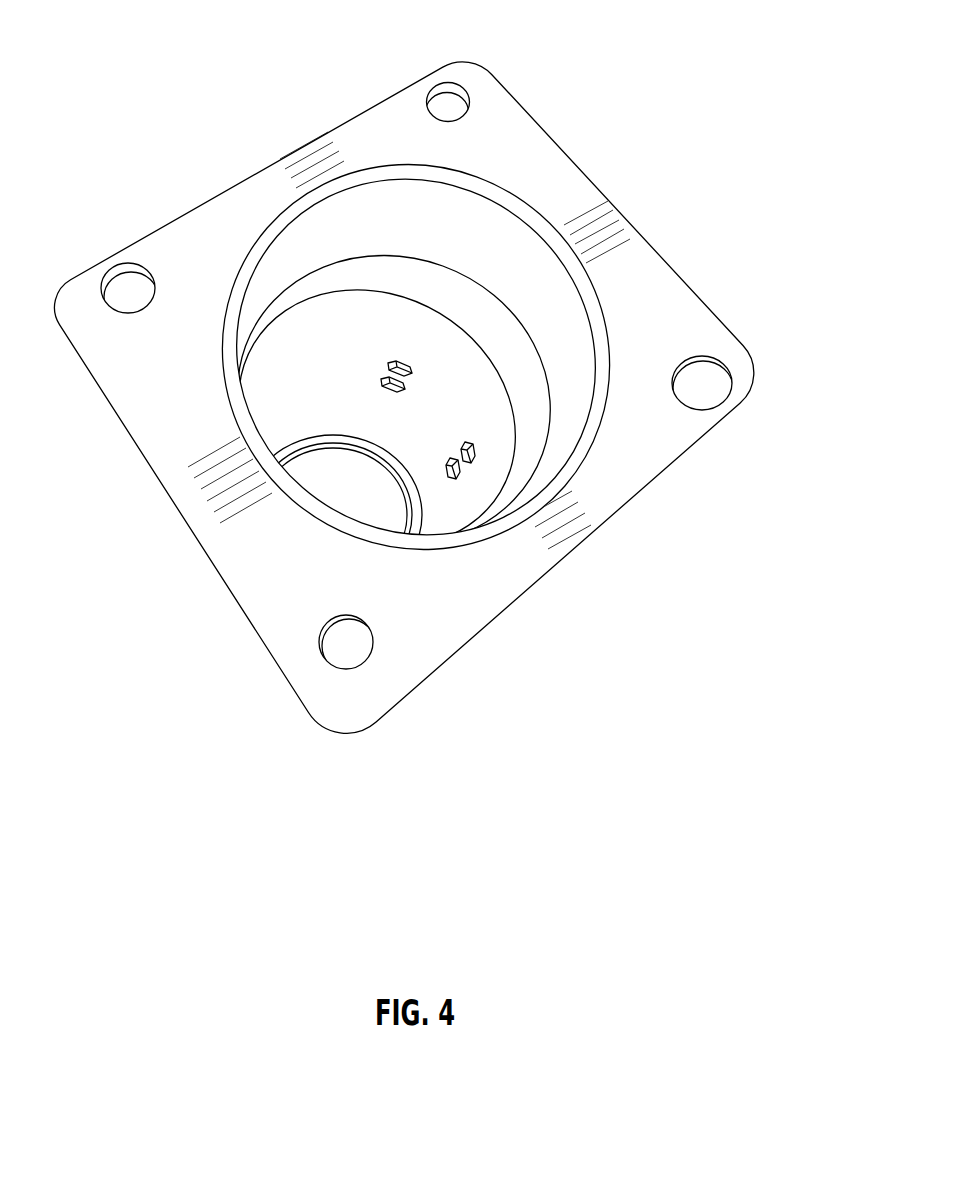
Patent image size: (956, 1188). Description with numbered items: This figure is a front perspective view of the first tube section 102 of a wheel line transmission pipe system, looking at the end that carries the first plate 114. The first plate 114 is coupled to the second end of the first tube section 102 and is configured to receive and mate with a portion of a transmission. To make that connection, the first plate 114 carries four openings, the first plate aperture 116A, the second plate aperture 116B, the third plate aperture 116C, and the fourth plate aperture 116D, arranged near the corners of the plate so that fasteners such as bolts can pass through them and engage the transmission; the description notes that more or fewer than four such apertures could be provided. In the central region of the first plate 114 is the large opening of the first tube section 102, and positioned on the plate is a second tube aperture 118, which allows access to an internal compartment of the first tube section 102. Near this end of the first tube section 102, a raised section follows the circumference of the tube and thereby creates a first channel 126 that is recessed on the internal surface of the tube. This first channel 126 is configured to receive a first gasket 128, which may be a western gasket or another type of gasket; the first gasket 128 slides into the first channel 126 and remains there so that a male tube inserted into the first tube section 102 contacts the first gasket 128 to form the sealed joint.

The first tube section 102 is at (255, 287).
The first plate 114 is at (148, 408).
The first plate aperture 116A is at (127, 292).
The second plate aperture 116B is at (438, 95).
The third plate aperture 116C is at (683, 375).
The fourth plate aperture 116D is at (340, 648).
The second tube aperture 118 is at (323, 478).
The first channel 126 is at (391, 270).
The first gasket 128 is at (337, 287).